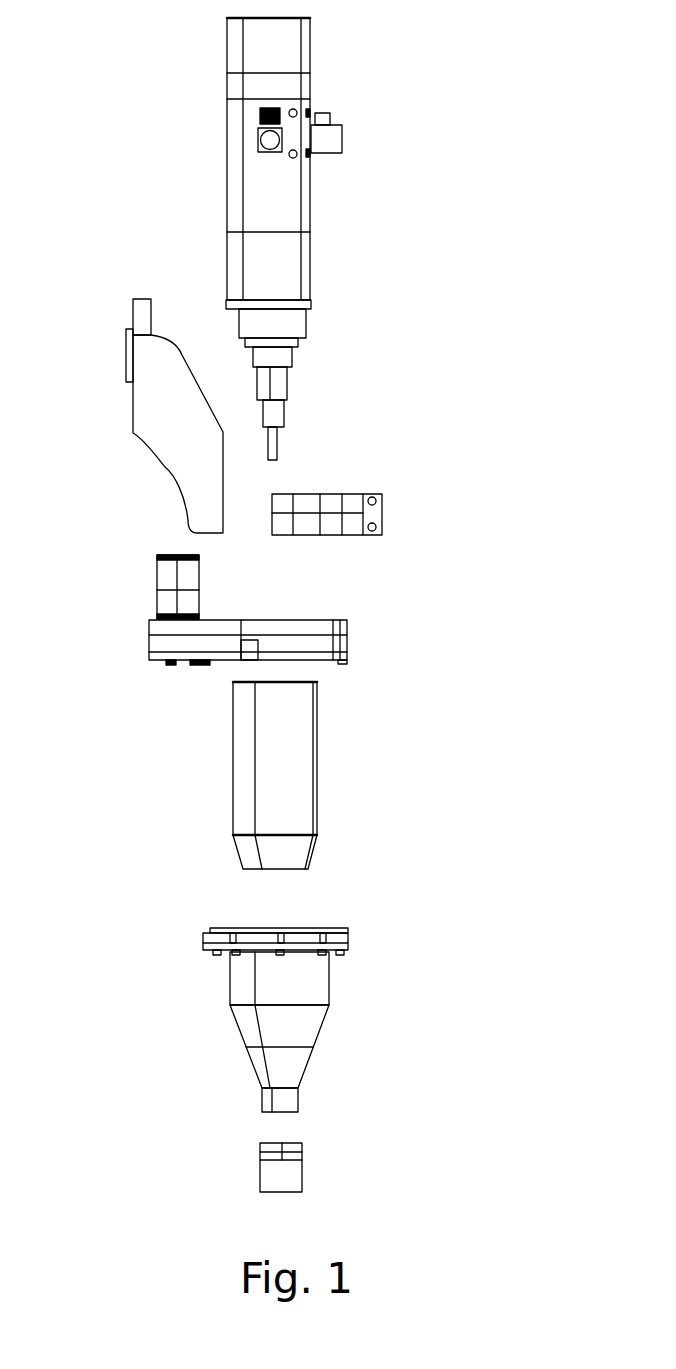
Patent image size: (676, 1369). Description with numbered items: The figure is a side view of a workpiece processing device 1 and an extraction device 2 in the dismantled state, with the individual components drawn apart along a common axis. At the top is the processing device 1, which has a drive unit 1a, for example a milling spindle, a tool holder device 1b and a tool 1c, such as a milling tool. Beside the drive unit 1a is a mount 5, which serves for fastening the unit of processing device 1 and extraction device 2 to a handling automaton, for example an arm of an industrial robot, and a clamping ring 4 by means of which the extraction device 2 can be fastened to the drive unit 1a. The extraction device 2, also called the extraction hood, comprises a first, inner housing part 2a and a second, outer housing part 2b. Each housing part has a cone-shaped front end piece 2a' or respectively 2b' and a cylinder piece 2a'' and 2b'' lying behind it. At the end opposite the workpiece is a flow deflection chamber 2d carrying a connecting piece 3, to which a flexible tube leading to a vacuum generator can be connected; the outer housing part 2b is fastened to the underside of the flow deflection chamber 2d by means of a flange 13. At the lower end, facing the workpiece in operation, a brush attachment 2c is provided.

The workpiece processing device 1 is at (430, 15).
The drive unit 1a is at (310, 202).
The tool holder device 1b is at (287, 378).
The tool 1c is at (278, 443).
The extraction device 2 is at (436, 619).
The inner housing part 2a is at (278, 794).
The cone-shaped front end piece of the inner housing part 2a' is at (317, 870).
The cylinder piece of the inner housing part 2a'' is at (320, 758).
The outer housing part 2b is at (283, 1023).
The cone-shaped front end piece of the outer housing part 2b' is at (317, 1059).
The cylinder piece of the outer housing part 2b'' is at (334, 996).
The brush attachment 2c is at (200, 1143).
The flow deflection chamber 2d is at (347, 641).
The connecting piece 3 is at (157, 577).
The clamping ring 4 is at (382, 518).
The mount 5 is at (133, 305).
The flange 13 is at (348, 930).